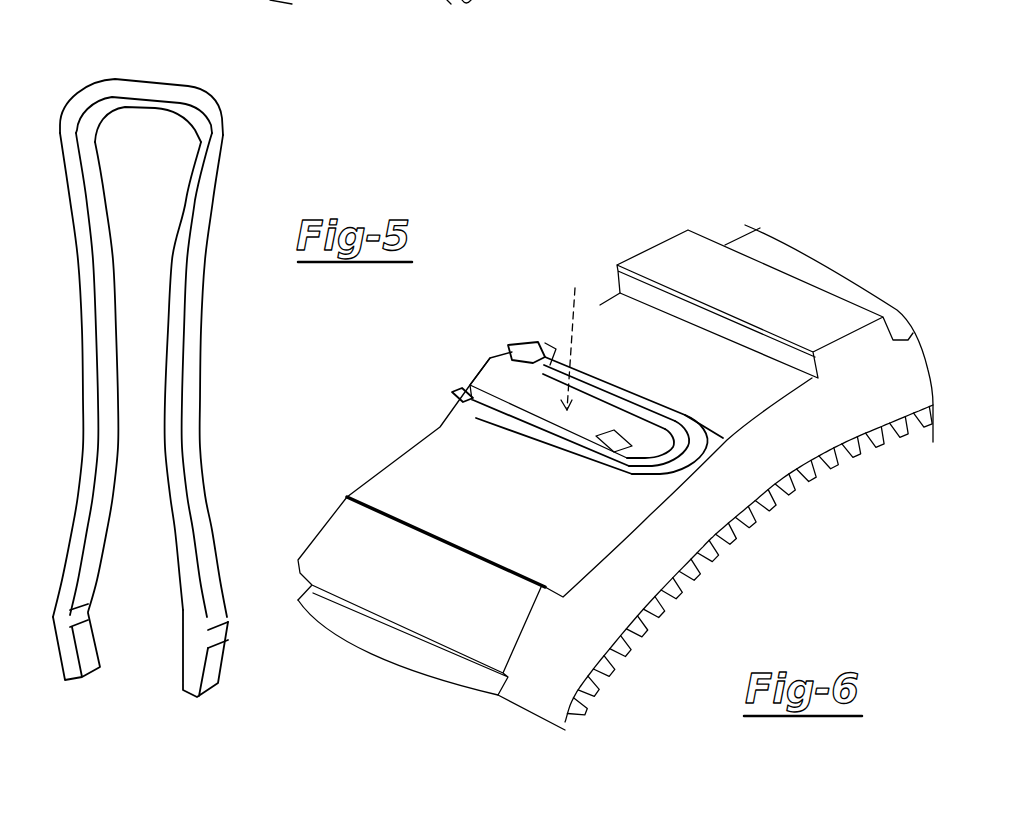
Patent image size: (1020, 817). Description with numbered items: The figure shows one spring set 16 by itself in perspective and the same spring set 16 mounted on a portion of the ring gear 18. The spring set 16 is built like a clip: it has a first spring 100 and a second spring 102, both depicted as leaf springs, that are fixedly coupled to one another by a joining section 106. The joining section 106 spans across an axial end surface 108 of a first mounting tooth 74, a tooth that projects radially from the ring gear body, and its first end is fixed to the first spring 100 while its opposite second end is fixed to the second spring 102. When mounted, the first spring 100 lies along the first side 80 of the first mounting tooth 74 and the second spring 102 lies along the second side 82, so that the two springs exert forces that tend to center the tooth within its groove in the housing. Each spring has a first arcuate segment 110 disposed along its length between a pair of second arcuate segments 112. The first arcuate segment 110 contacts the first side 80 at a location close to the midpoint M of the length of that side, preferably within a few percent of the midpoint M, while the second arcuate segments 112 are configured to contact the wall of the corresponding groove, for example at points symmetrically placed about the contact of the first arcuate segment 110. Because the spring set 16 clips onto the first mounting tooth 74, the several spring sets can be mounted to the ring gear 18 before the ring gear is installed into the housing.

In FIG. 5, the spring set 16 is at (238, 117).
In FIG. 6, the spring set 16 is at (690, 474).
In FIG. 6, the ring gear 18 is at (540, 673).
In FIG. 6, the first mounting tooth 74 is at (490, 378).
In FIG. 6, the first side 80 is at (626, 457).
In FIG. 6, the second side 82 is at (552, 350).
In FIG. 5, the first spring 100 is at (205, 381).
In FIG. 6, the first spring 100 is at (548, 448).
In FIG. 5, the second spring 102 is at (76, 369).
In FIG. 6, the second spring 102 is at (611, 385).
In FIG. 5, the joining section 106 is at (140, 87).
In FIG. 6, the joining section 106 is at (662, 472).
In FIG. 6, the axial end surface 108 is at (700, 447).
In FIG. 5, the first arcuate segment 110 is at (90, 428).
In FIG. 6, the first arcuate segment 110 is at (586, 392).
In FIG. 5, the second arcuate segment 112 is at (62, 124).
In FIG. 6, the second arcuate segment 112 is at (455, 395).
In FIG. 6, the midpoint M is at (572, 332).